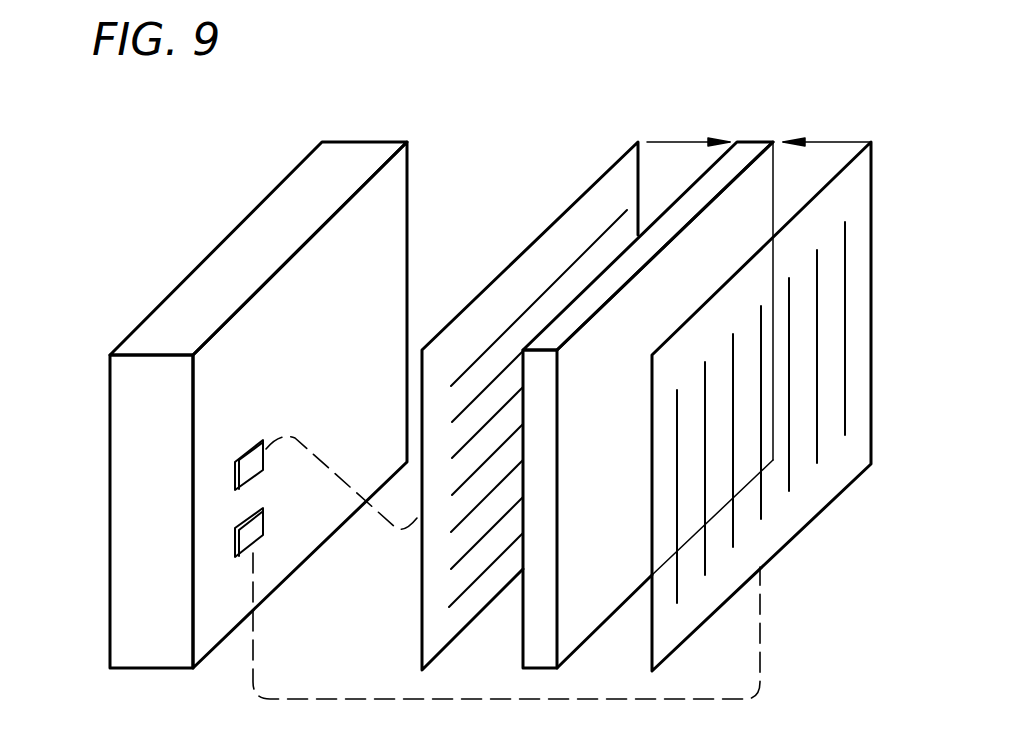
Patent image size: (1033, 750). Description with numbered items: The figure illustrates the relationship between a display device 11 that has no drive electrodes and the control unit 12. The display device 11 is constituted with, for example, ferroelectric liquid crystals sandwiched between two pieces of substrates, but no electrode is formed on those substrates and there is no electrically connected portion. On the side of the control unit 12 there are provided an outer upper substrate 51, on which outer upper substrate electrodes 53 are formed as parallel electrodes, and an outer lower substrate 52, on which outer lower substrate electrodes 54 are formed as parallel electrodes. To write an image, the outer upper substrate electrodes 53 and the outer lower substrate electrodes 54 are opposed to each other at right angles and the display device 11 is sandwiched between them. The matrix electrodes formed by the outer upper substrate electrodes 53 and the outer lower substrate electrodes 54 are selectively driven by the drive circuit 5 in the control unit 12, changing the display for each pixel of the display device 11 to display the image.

The control unit 12 is at (365, 142).
The drive circuit 5 is at (260, 473).
The outer lower substrate 52 is at (418, 638).
The outer lower substrate electrodes 54 is at (557, 277).
The display device 11 is at (753, 142).
The outer upper substrate 51 is at (720, 607).
The outer upper substrate electrodes 53 is at (733, 525).